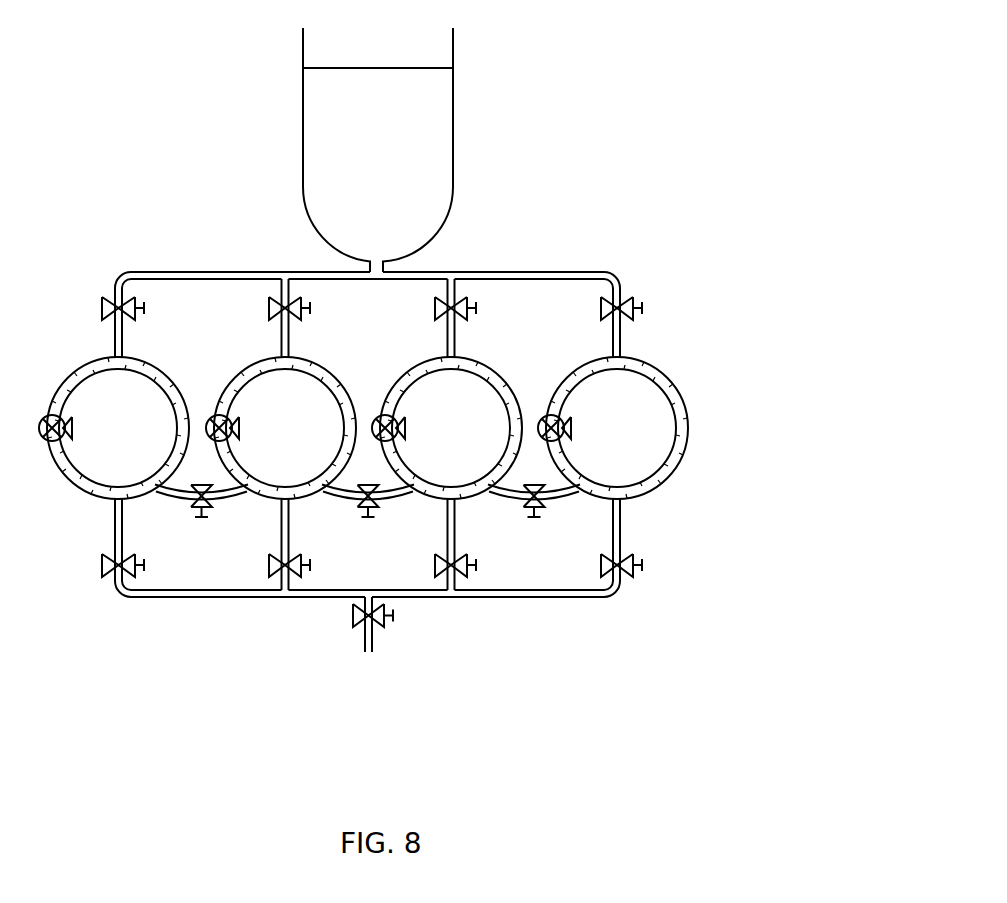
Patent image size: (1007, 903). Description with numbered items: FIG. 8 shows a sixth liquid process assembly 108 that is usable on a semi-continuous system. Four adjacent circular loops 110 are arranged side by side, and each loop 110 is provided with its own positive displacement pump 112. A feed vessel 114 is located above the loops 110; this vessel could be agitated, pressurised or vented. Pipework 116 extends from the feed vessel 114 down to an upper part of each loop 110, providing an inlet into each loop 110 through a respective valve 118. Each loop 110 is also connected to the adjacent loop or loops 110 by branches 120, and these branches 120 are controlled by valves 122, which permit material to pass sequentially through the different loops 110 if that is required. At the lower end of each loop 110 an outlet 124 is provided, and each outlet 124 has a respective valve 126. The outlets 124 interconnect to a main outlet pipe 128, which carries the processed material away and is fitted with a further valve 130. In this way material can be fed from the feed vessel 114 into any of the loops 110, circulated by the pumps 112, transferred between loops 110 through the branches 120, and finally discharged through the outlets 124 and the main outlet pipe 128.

The sixth assembly 108 is at (204, 720).
The circular loop 110 is at (508, 382).
The positive displacement pump 112 is at (560, 428).
The feed vessel 114 is at (455, 138).
The pipework 116 is at (487, 272).
The valve 118 is at (619, 304).
The branch 120 is at (560, 497).
The valve 122 is at (532, 507).
The outlet 124 is at (622, 523).
The valve 126 is at (636, 558).
The main outlet pipe 128 is at (363, 647).
The further valve 130 is at (382, 620).